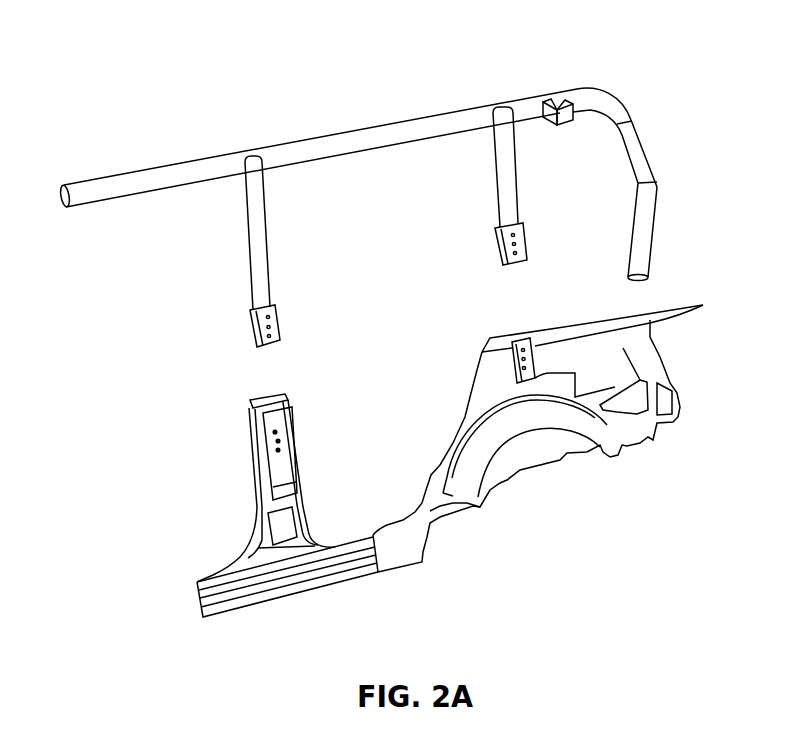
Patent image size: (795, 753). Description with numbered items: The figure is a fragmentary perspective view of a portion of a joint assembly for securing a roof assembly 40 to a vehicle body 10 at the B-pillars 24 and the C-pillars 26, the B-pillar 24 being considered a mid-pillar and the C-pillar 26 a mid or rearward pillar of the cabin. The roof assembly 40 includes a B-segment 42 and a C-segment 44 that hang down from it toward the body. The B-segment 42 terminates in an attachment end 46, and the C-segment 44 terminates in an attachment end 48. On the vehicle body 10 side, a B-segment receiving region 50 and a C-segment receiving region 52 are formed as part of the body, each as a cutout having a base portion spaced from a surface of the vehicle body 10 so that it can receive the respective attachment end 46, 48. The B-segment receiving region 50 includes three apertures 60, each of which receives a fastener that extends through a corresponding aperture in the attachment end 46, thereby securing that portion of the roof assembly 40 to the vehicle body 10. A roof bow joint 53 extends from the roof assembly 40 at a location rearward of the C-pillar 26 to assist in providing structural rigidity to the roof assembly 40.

The vehicle body 10 is at (392, 590).
The B-pillar 24 is at (244, 146).
The C-pillar 26 is at (502, 100).
The roof assembly 40 is at (528, 88).
The B-segment 42 is at (244, 253).
The C-segment 44 is at (491, 203).
The attachment end 46 is at (248, 367).
The attachment end 48 is at (499, 265).
The B-segment receiving region 50 is at (282, 394).
The C-segment receiving region 52 is at (521, 334).
The roof bow joint 53 is at (564, 95).
The apertures 60 is at (278, 450).